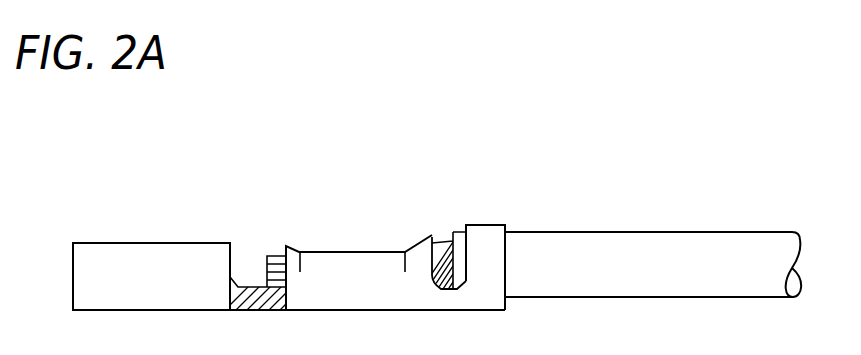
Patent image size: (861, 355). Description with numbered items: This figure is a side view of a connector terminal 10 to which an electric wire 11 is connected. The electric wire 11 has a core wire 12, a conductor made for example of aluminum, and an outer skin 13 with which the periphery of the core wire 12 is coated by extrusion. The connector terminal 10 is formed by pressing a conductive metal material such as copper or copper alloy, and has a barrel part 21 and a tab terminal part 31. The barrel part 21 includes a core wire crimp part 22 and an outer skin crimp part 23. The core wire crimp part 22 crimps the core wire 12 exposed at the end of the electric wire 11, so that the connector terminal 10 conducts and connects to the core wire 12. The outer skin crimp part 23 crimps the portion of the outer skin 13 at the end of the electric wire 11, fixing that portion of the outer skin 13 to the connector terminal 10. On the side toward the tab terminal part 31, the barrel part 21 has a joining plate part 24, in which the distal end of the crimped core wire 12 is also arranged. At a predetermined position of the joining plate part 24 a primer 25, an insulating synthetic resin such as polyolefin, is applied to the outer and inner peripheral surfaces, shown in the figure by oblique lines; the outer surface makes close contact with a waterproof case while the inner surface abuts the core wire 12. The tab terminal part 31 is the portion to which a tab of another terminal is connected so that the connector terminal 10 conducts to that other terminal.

The connector terminal 10 is at (510, 212).
The electric wire 11 is at (742, 229).
The core wire 12 is at (443, 243).
The outer skin 13 is at (626, 237).
The barrel part 21 is at (373, 222).
The core wire crimp part 22 is at (333, 251).
The outer skin crimp part 23 is at (482, 228).
The joining plate part 24 is at (248, 283).
The primer 25 is at (247, 303).
The tab terminal part 31 is at (143, 237).